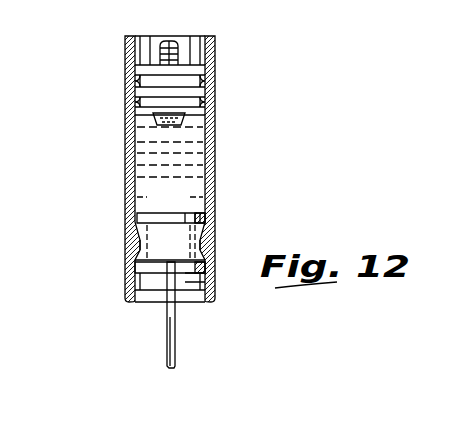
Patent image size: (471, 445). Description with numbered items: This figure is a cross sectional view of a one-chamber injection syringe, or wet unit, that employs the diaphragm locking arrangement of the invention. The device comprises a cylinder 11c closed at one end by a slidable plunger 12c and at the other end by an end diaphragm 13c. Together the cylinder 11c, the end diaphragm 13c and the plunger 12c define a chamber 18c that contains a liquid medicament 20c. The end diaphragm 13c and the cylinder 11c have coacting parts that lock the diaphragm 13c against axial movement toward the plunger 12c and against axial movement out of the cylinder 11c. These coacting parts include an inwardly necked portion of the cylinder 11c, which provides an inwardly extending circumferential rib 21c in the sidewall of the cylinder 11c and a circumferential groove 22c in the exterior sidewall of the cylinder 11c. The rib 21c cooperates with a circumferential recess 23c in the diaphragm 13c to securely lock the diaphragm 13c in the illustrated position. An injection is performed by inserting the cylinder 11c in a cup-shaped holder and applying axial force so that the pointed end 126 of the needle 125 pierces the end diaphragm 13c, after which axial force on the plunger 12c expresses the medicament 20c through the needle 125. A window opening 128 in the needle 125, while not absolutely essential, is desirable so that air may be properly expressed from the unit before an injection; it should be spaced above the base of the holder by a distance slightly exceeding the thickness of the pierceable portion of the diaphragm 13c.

The cylinder 11c is at (215, 157).
The slidable plunger 12c is at (216, 86).
The end diaphragm 13c is at (137, 258).
The chamber 18c is at (137, 149).
The liquid medicament 20c is at (208, 177).
The circumferential rib 21c is at (211, 233).
The circumferential groove 22c is at (130, 252).
The circumferential recess 23c is at (172, 237).
The needle 125 is at (176, 352).
The pointed end 126 is at (215, 276).
The window opening 128 is at (167, 325).